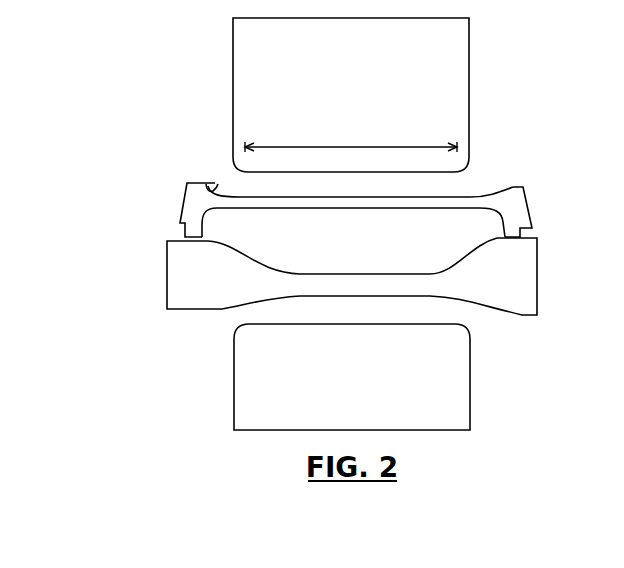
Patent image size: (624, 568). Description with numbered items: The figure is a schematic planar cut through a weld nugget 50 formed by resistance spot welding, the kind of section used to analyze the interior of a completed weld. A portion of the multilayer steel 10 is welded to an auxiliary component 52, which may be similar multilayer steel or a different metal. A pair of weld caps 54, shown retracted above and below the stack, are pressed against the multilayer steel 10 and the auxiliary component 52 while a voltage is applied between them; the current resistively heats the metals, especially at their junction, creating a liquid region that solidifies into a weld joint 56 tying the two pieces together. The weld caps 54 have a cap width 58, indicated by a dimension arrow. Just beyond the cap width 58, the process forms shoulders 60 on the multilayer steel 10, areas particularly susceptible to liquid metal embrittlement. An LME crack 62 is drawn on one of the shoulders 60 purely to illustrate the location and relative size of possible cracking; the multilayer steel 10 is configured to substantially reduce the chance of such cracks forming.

The multilayer steel 10 is at (183, 213).
The weld nugget 50 is at (119, 137).
The auxiliary component 52 is at (175, 295).
The weld caps 54 is at (457, 77).
The weld joint 56 is at (358, 257).
The cap width 58 is at (315, 147).
The shoulders 60 is at (195, 182).
The LME crack 62 is at (220, 182).